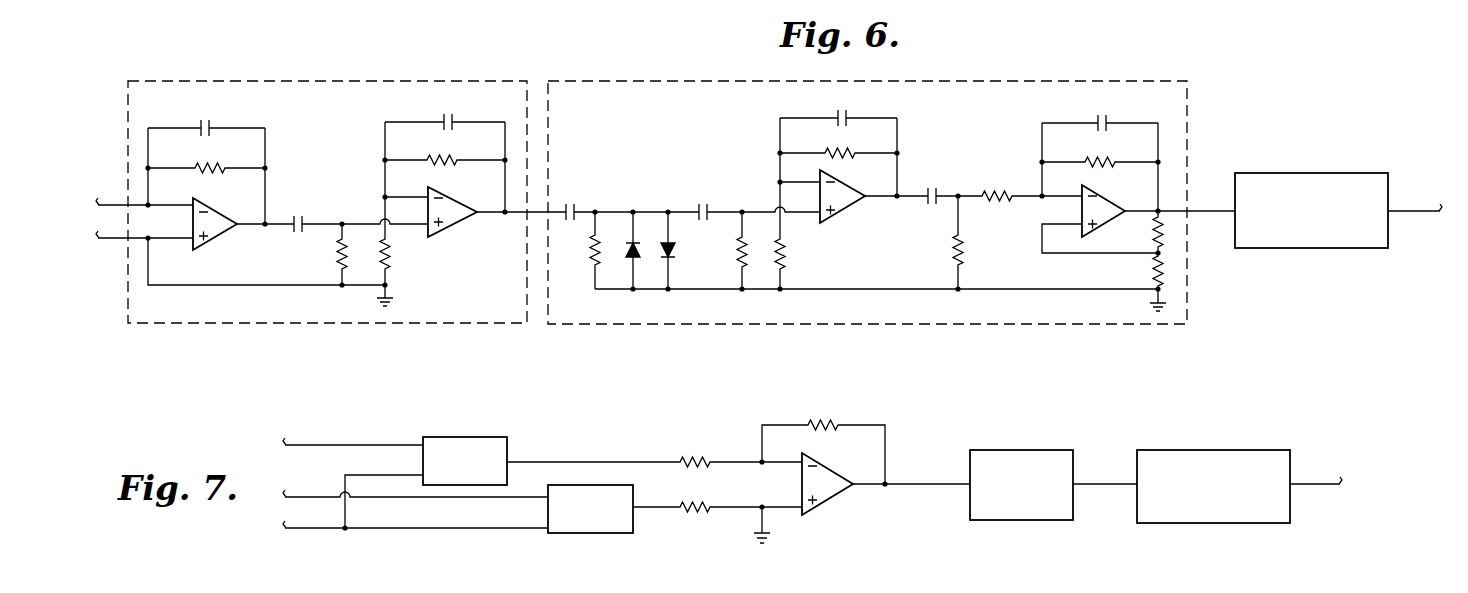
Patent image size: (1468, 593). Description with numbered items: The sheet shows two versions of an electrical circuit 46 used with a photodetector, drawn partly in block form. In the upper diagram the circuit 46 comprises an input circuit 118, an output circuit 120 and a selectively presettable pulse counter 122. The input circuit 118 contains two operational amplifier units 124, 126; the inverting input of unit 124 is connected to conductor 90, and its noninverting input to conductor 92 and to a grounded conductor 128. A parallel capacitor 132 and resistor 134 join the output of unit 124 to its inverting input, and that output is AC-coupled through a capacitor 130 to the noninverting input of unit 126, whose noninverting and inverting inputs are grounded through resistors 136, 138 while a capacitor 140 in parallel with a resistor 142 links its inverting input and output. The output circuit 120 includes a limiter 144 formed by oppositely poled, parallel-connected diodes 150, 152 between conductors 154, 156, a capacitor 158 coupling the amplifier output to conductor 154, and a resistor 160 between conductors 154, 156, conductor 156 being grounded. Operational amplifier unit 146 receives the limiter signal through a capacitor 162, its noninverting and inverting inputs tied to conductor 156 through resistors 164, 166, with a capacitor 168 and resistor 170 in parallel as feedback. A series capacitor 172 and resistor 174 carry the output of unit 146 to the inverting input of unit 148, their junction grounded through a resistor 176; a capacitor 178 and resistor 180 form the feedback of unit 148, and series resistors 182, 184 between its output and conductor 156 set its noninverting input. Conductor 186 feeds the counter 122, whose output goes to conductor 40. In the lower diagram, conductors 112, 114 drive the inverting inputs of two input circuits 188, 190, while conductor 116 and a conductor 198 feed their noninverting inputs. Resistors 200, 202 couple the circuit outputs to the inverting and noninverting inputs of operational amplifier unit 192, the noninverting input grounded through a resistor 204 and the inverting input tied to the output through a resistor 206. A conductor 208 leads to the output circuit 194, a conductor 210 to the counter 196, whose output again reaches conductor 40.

In FIG. 6, the conductor 40 is at (1408, 211).
In FIG. 7, the conductor 40 is at (1312, 484).
In FIG. 6, the electrical circuit 46 is at (516, 42).
In FIG. 7, the electrical circuit 46 is at (606, 412).
In FIG. 6, the conductor 90 is at (95, 204).
In FIG. 6, the conductor 92 is at (96, 240).
In FIG. 7, the conductor 112 is at (322, 444).
In FIG. 7, the conductor 114 is at (306, 496).
In FIG. 7, the conductor 116 is at (316, 528).
In FIG. 6, the input circuit 118 is at (295, 81).
In FIG. 6, the output circuit 120 is at (663, 82).
In FIG. 6, the selectively presettable pulse counter 122 is at (1298, 172).
In FIG. 6, the operational amplifier unit 124 is at (222, 232).
In FIG. 6, the operational amplifier unit 126 is at (447, 228).
In FIG. 6, the grounded conductor 128 is at (200, 284).
In FIG. 6, the capacitor 130 is at (303, 215).
In FIG. 6, the capacitor 132 is at (212, 126).
In FIG. 6, the resistor 134 is at (207, 165).
In FIG. 6, the resistor 136 is at (336, 258).
In FIG. 6, the resistor 138 is at (391, 262).
In FIG. 6, the capacitor 140 is at (455, 120).
In FIG. 6, the resistor 142 is at (450, 158).
In FIG. 6, the limiter 144 is at (646, 172).
In FIG. 6, the operational amplifier unit 146 is at (852, 208).
In FIG. 6, the operational amplifier unit 148 is at (1105, 224).
In FIG. 6, the diode 150 is at (630, 250).
In FIG. 6, the diode 152 is at (664, 250).
In FIG. 6, the conductor 154 is at (606, 210).
In FIG. 6, the conductor 156 is at (650, 291).
In FIG. 6, the capacitor 158 is at (575, 203).
In FIG. 6, the resistor 160 is at (591, 258).
In FIG. 6, the capacitor 162 is at (700, 204).
In FIG. 6, the resistor 164 is at (737, 256).
In FIG. 6, the resistor 166 is at (787, 258).
In FIG. 6, the capacitor 168 is at (852, 118).
In FIG. 6, the resistor 170 is at (848, 151).
In FIG. 6, the capacitor 172 is at (940, 190).
In FIG. 6, the resistor 174 is at (1020, 212).
In FIG. 6, the resistor 176 is at (952, 256).
In FIG. 6, the capacitor 178 is at (1112, 120).
In FIG. 6, the resistor 180 is at (1106, 158).
In FIG. 6, the resistor 182 is at (1168, 237).
In FIG. 6, the resistor 184 is at (1170, 273).
In FIG. 6, the conductor 186 is at (1203, 208).
In FIG. 7, the input circuit 188 is at (458, 436).
In FIG. 7, the input circuit 190 is at (568, 534).
In FIG. 7, the operational amplifier unit 192 is at (830, 502).
In FIG. 7, the output circuit 194 is at (1018, 450).
In FIG. 7, the counter 196 is at (1216, 450).
In FIG. 7, the conductor 198 is at (364, 474).
In FIG. 7, the resistor 200 is at (694, 456).
In FIG. 7, the resistor 202 is at (686, 512).
In FIG. 7, the resistor 204 is at (758, 533).
In FIG. 7, the resistor 206 is at (832, 420).
In FIG. 7, the conductor 208 is at (914, 483).
In FIG. 7, the conductor 210 is at (1096, 484).